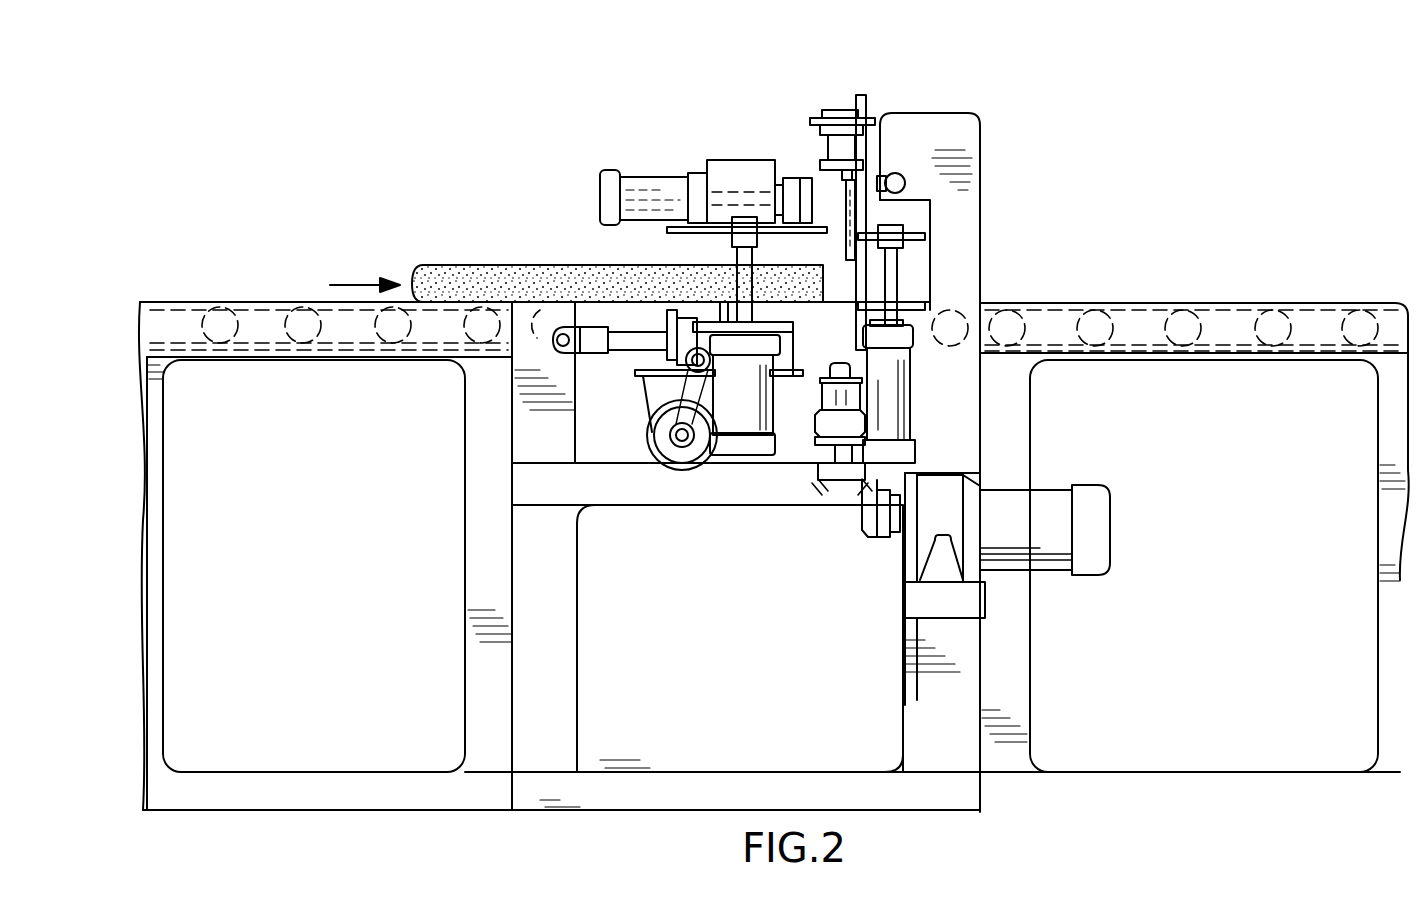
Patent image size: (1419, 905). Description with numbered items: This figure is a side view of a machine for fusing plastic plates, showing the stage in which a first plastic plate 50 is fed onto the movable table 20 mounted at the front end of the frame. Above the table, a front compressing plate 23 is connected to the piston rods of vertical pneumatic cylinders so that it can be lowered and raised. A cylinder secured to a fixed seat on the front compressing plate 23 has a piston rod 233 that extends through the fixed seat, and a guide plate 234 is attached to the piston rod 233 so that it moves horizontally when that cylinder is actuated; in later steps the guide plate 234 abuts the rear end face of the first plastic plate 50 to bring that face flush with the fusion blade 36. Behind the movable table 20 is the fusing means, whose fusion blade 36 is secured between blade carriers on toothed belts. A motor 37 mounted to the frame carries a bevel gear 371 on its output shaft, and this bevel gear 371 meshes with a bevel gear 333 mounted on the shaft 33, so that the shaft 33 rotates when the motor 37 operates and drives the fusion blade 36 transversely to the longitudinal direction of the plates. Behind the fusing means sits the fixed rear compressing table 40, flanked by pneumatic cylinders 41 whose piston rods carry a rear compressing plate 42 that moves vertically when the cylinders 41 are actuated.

The movable table 20 is at (665, 312).
The front compressing plate 23 is at (672, 236).
The piston rod 233 is at (725, 190).
The guide plate 234 is at (797, 183).
The shaft 33 is at (838, 446).
The bevel gear 333 is at (837, 488).
The fusion blade 36 is at (846, 262).
The motor 37 is at (1053, 535).
The bevel gear 371 is at (868, 520).
The rear compressing table 40 is at (925, 305).
The pneumatic cylinder 41 is at (897, 416).
The rear compressing plate 42 is at (925, 234).
The first plastic plate 50 is at (446, 278).